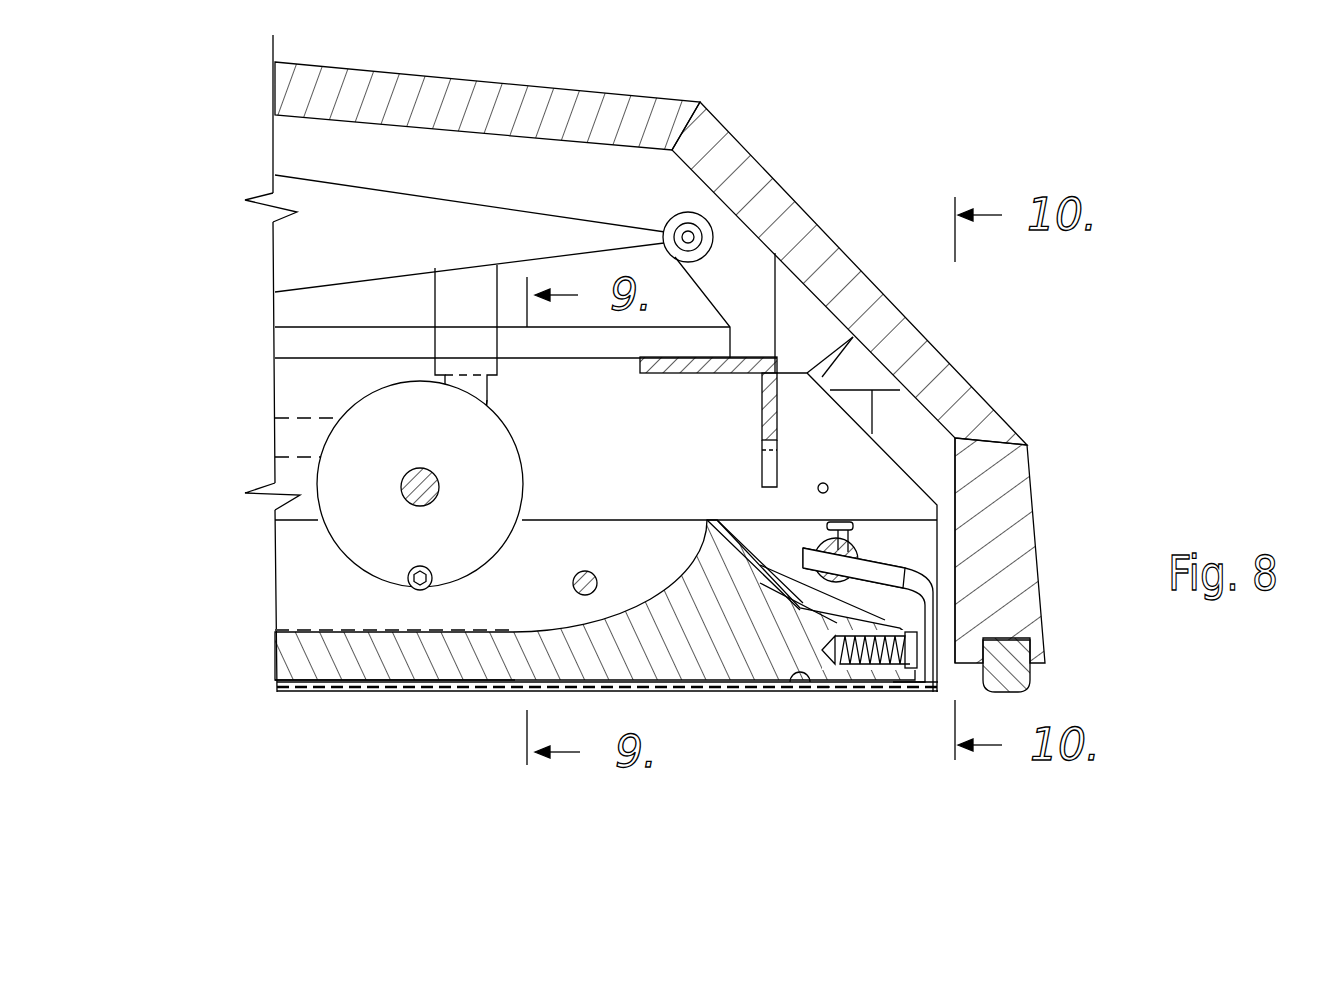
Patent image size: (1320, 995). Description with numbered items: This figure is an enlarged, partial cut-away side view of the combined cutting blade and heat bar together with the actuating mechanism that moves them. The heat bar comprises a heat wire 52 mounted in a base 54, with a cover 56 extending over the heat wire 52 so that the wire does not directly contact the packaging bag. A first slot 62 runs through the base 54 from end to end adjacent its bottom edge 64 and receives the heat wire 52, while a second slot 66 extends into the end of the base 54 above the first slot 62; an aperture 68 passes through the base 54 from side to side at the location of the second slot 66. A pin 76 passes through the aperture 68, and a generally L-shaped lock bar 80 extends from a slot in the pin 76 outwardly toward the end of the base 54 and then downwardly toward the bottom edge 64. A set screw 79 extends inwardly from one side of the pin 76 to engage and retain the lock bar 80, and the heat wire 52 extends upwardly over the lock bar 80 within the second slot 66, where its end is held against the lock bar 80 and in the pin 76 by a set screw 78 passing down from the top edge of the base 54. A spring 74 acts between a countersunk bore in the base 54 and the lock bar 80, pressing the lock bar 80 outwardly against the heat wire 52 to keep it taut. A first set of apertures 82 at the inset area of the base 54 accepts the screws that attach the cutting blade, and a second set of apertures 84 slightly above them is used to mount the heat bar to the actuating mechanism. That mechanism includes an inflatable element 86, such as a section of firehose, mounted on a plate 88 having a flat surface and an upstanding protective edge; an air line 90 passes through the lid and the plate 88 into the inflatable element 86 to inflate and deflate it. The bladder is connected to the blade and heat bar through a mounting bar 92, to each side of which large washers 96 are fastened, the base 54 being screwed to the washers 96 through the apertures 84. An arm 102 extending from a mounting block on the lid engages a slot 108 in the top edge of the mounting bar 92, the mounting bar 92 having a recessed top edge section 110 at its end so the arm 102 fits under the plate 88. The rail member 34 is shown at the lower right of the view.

The rail member 34 is at (1025, 682).
The heat wire 52 is at (797, 682).
The base 54 is at (730, 655).
The cover 56 is at (626, 690).
The first slot 62 is at (824, 694).
The bottom edge 64 is at (897, 690).
The second slot 66 is at (965, 577).
The aperture 68 is at (985, 515).
The spring 74 is at (912, 645).
The pin 76 is at (822, 530).
The set screw 78 is at (868, 500).
The set screw 79 is at (800, 553).
The lock bar 80 is at (888, 598).
The first apertures 82 is at (590, 571).
The second apertures 84 is at (422, 566).
The inflatable element 86 is at (373, 217).
The plate 88 is at (688, 338).
The air line 90 is at (292, 441).
The mounting bar 92 is at (853, 337).
The washers 96 is at (343, 522).
The arm 102 is at (752, 357).
The slot 108 is at (752, 455).
The recessed top edge section 110 is at (640, 368).